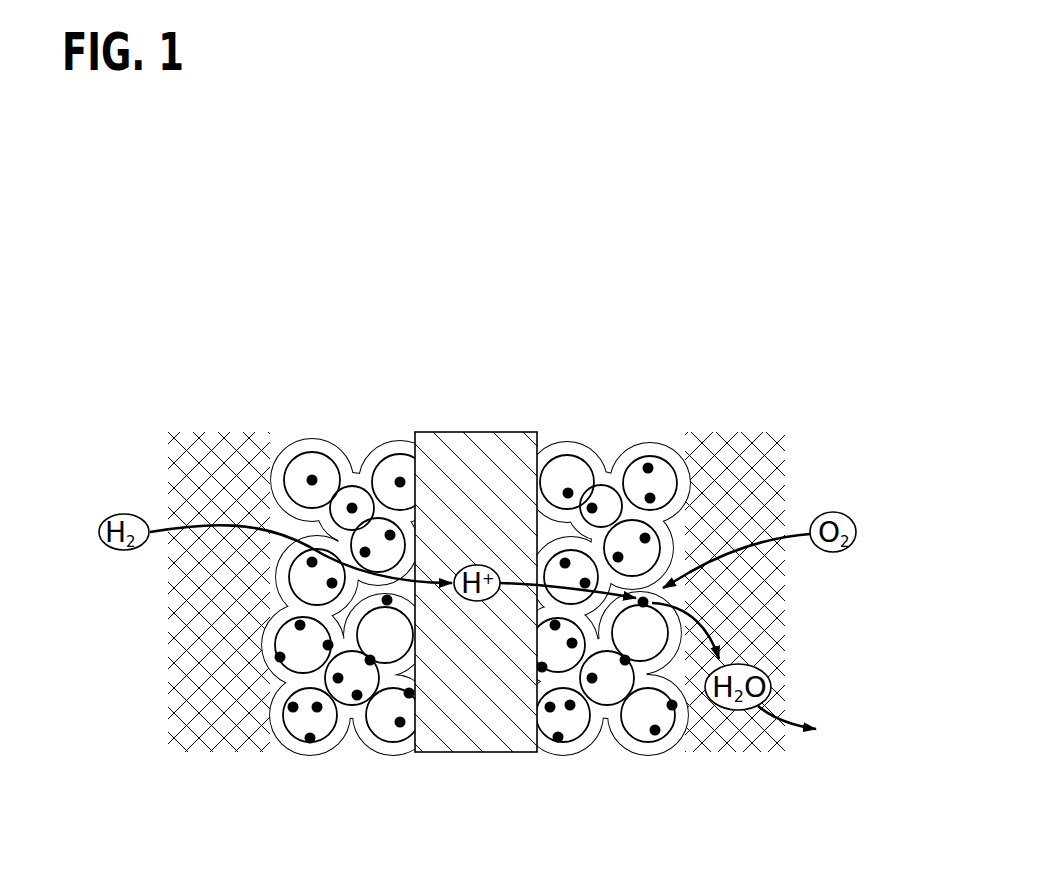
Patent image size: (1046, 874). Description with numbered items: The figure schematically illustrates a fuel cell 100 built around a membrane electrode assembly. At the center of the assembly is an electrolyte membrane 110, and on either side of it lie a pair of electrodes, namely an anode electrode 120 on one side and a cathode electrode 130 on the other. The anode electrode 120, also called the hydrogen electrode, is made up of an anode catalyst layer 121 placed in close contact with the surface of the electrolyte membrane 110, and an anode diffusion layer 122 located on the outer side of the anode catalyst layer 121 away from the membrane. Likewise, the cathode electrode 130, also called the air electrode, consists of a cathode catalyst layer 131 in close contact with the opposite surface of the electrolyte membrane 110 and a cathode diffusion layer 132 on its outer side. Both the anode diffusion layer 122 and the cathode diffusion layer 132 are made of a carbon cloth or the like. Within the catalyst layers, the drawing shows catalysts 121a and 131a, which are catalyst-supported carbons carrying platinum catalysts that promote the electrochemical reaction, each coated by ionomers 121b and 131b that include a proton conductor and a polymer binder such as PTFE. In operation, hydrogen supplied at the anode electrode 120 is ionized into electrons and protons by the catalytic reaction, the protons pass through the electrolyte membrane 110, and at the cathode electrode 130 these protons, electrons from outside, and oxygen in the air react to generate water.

The fuel cell 100 is at (476, 575).
The electrolyte membrane 110 is at (460, 432).
The anode electrode 120 is at (304, 601).
The anode catalyst layer 121 is at (351, 579).
The catalyst 121a is at (396, 452).
The ionomer 121b is at (312, 438).
The anode diffusion layer 122 is at (268, 755).
The cathode electrode 130 is at (651, 599).
The cathode catalyst layer 131 is at (623, 577).
The catalyst 131a is at (578, 444).
The ionomer 131b is at (648, 444).
The cathode diffusion layer 132 is at (785, 755).